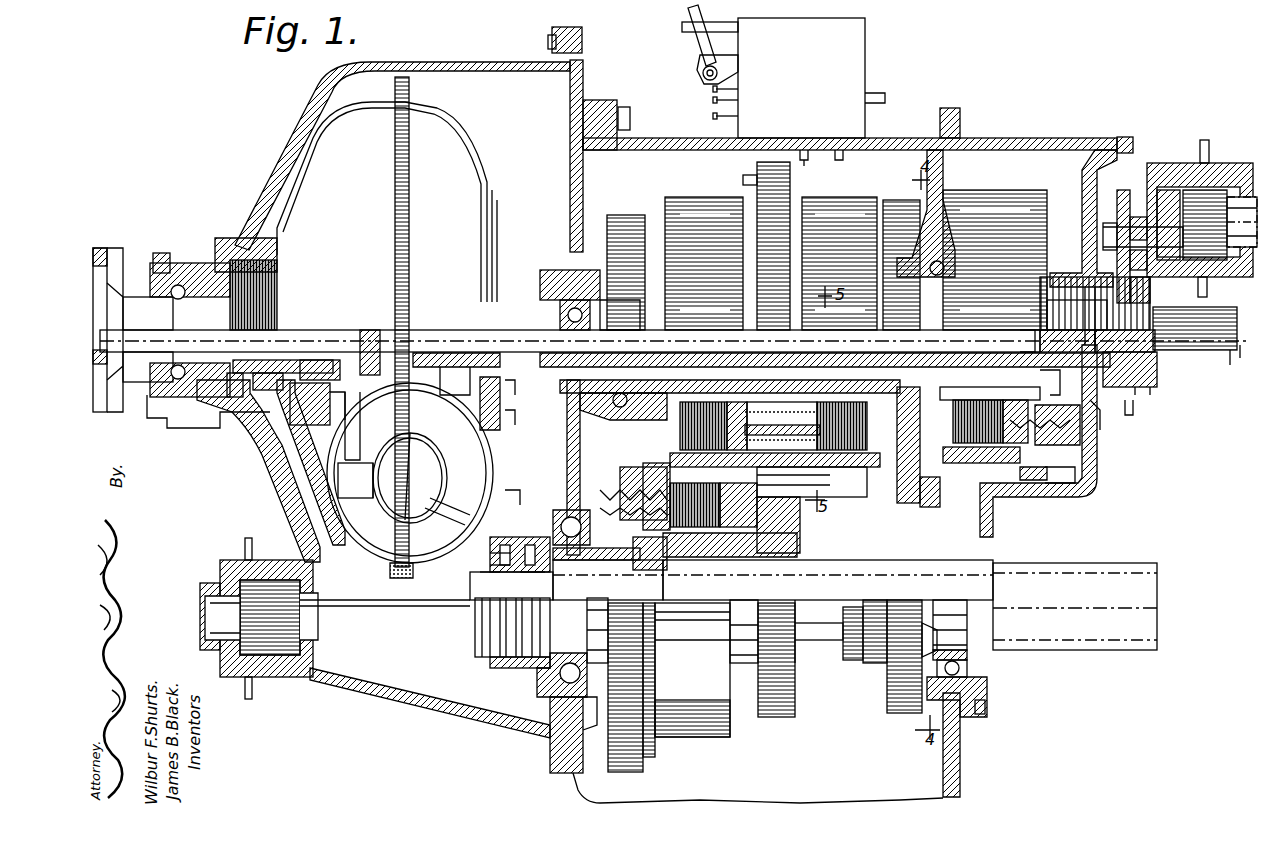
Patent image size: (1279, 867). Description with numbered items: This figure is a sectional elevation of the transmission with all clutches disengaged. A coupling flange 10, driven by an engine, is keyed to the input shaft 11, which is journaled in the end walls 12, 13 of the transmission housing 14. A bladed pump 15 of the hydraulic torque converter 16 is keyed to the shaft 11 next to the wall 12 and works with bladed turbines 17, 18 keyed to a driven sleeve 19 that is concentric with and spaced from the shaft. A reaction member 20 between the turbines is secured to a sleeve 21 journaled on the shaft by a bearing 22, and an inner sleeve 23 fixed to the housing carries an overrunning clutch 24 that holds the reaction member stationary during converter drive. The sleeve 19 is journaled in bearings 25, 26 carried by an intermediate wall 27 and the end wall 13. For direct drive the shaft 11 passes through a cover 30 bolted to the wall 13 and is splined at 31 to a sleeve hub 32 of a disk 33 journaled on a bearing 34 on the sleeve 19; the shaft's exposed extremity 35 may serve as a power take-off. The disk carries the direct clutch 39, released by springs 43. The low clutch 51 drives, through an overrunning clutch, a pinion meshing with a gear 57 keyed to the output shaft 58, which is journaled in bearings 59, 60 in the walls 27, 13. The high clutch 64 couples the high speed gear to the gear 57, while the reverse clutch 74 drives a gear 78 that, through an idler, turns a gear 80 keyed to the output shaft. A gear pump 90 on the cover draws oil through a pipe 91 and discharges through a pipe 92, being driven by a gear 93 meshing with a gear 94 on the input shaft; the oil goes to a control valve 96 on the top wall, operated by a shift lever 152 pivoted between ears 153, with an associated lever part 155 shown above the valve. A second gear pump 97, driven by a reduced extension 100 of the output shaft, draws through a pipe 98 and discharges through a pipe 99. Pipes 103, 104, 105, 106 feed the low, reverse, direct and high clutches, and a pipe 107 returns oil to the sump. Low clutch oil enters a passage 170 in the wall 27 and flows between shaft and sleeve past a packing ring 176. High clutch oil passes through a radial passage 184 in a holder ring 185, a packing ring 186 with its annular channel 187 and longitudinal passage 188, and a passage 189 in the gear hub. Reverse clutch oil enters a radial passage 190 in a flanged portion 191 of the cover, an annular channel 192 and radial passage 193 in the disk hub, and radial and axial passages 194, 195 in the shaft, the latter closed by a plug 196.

The coupling flange 10 is at (100, 250).
The input shaft 11 is at (300, 330).
The end wall 12 is at (268, 455).
The end wall 13 is at (962, 746).
The transmission housing 14 is at (293, 117).
The bladed pump 15 is at (445, 410).
The hydraulic torque converter 16 is at (507, 460).
The bladed turbine 17 is at (430, 515).
The bladed turbine 18 is at (350, 400).
The driven sleeve 19 is at (612, 365).
The reaction member 20 is at (355, 480).
The sleeve 21 is at (332, 420).
The bearing 22 is at (377, 330).
The sleeve 23 is at (268, 360).
The overrunning clutch 24 is at (328, 360).
The bearing 25 is at (575, 353).
The bearing 26 is at (945, 350).
The intermediate wall 27 is at (566, 463).
The cover 30 is at (1097, 484).
The splines 31 is at (1050, 320).
The sleeve hub 32 is at (1051, 382).
The disk 33 is at (1061, 473).
The bearing 34 is at (1020, 343).
The exposed shaft extremity 35 is at (1223, 364).
The direct drive clutch 39 is at (980, 463).
The spring 43 is at (1045, 445).
The low speed clutch 51 is at (680, 433).
The gear 57 is at (650, 772).
The output shaft 58 is at (1050, 650).
The bearing 59 is at (585, 528).
The bearing 60 is at (948, 600).
The high speed clutch 64 is at (722, 525).
The reverse clutch 74 is at (845, 467).
The gear 78 is at (810, 300).
The gear 80 is at (795, 680).
The gear pump 90 is at (1230, 170).
The pipe 91 is at (1208, 287).
The pipe 92 is at (714, 89).
The gear 93 is at (1135, 185).
The gear 94 is at (1150, 300).
The control valve 96 is at (806, 56).
The gear pump 97 is at (220, 570).
The pipe 98 is at (252, 693).
The pipe 99 is at (245, 548).
The reduced extension 100 is at (362, 608).
The pipe 103 is at (806, 166).
The pipe 104 is at (714, 100).
The pipe 105 is at (883, 95).
The pipe 106 is at (846, 158).
The pipe 107 is at (714, 116).
The shift lever 152 is at (700, 32).
The ears 153 is at (697, 58).
The control lever 155 is at (688, 14).
The passage 170 is at (525, 385).
The packing ring 176 is at (480, 333).
The radial passage 184 is at (505, 538).
The holder ring 185 is at (490, 553).
The packing ring 186 is at (490, 565).
The annular channel 187 is at (495, 575).
The longitudinal passage 188 is at (535, 585).
The passage 189 is at (592, 565).
The radial passage 190 is at (1138, 390).
The flanged portion 191 is at (1155, 388).
The annular channel 192 is at (1145, 369).
The radial passage 193 is at (1160, 352).
The radial passage 194 is at (1125, 341).
The axial passage 195 is at (1067, 341).
The plug 196 is at (1250, 356).